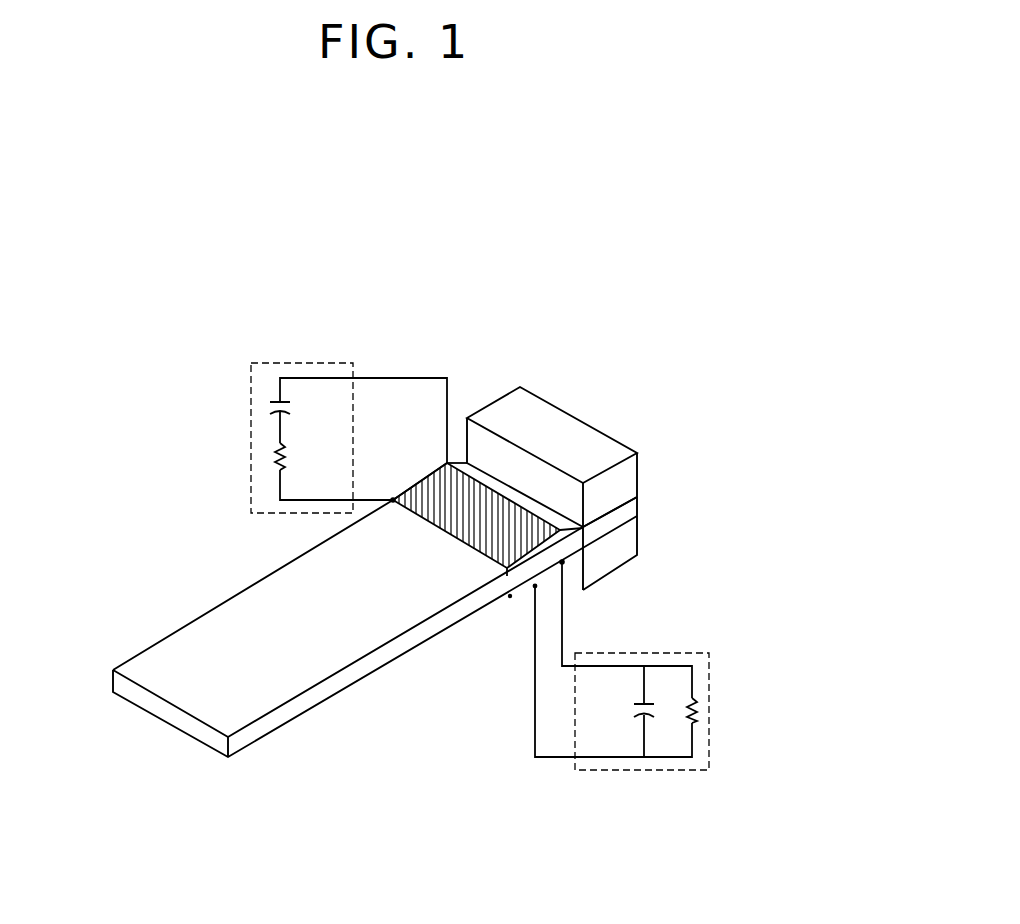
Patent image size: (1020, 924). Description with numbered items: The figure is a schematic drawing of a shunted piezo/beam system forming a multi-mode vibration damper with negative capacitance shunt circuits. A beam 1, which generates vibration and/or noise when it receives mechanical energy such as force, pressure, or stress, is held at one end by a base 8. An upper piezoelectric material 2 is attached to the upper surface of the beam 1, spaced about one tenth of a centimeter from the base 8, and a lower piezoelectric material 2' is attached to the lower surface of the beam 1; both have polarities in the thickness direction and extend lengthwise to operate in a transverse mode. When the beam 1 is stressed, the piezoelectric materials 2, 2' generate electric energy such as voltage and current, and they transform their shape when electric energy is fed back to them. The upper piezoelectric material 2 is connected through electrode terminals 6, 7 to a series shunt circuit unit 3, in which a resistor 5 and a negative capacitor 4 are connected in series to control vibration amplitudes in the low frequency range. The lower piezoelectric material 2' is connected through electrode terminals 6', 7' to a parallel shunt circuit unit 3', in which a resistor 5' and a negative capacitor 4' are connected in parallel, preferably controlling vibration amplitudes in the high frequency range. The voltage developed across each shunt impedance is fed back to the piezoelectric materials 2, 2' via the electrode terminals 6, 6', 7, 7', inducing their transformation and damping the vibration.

The beam 1 is at (293, 708).
The upper piezoelectric material 2 is at (488, 566).
The lower piezoelectric material 2' is at (502, 622).
The series shunt circuit unit 3 is at (322, 407).
The parallel shunt circuit unit 3' is at (659, 666).
The negative capacitor 4 is at (243, 422).
The negative capacitor 4' is at (665, 679).
The resistor 5 is at (243, 459).
The resistor 5' is at (730, 724).
The electrode terminal 6 is at (477, 492).
The electrode terminal 6' is at (513, 634).
The electrode terminal 7 is at (388, 460).
The electrode terminal 7' is at (603, 586).
The base 8 is at (627, 538).